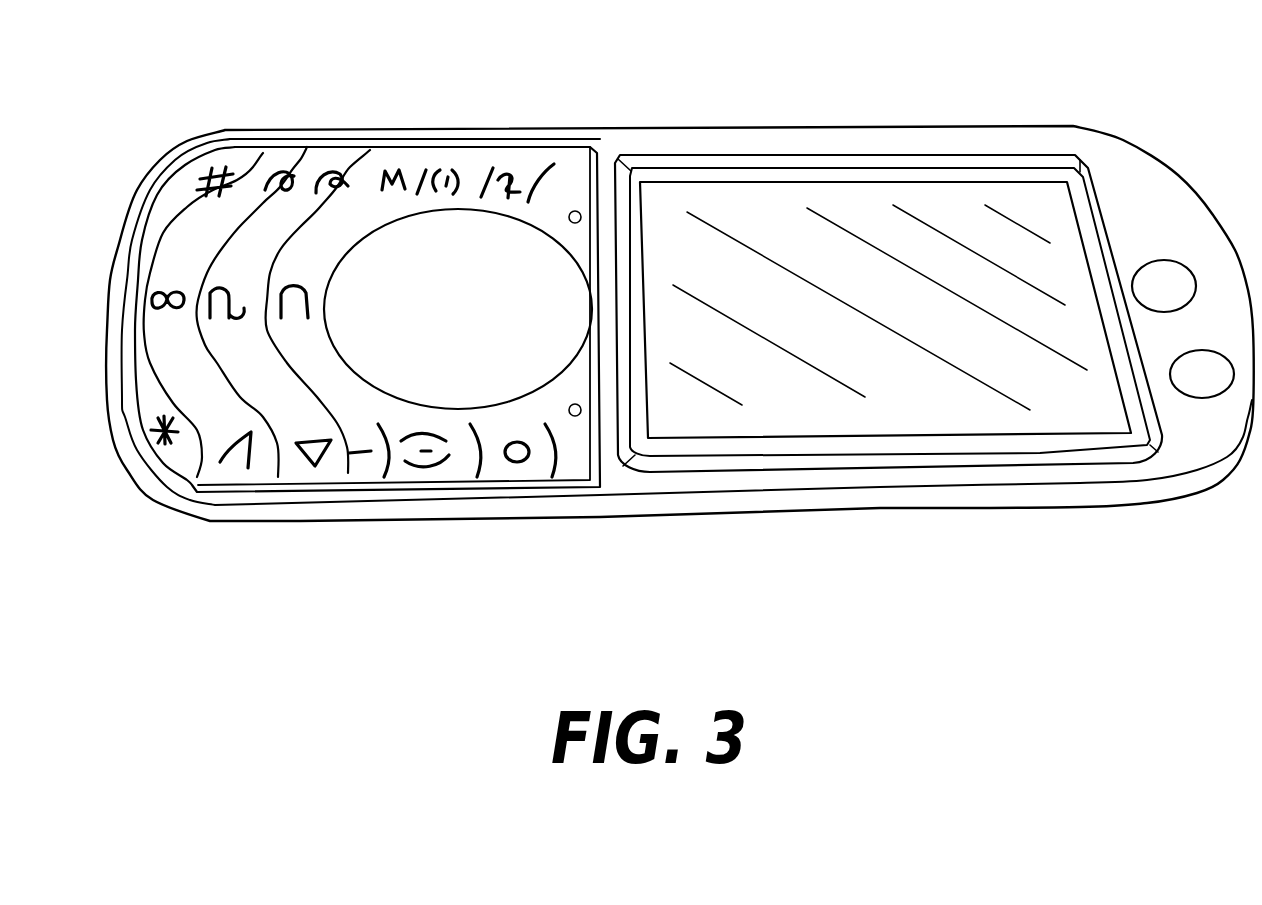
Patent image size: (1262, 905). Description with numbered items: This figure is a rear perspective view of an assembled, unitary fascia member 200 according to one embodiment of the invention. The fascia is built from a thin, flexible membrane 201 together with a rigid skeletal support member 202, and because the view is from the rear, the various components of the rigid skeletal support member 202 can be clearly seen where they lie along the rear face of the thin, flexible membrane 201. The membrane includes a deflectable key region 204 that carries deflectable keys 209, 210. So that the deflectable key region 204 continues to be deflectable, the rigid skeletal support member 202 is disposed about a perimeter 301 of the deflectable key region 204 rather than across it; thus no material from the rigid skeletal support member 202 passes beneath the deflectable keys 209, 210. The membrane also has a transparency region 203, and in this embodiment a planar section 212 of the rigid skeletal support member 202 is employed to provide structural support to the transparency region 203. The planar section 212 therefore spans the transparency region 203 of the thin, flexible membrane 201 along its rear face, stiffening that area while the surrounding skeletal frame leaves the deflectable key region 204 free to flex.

The unitary fascia member 200 is at (297, 597).
The thin, flexible membrane 201 is at (245, 150).
The rigid skeletal support member 202 is at (622, 477).
The transparency region 203 is at (787, 213).
The deflectable key region 204 is at (260, 367).
The deflectable key 209 is at (285, 150).
The deflectable key 210 is at (352, 150).
The planar section 212 is at (890, 330).
The perimeter 301 is at (528, 150).